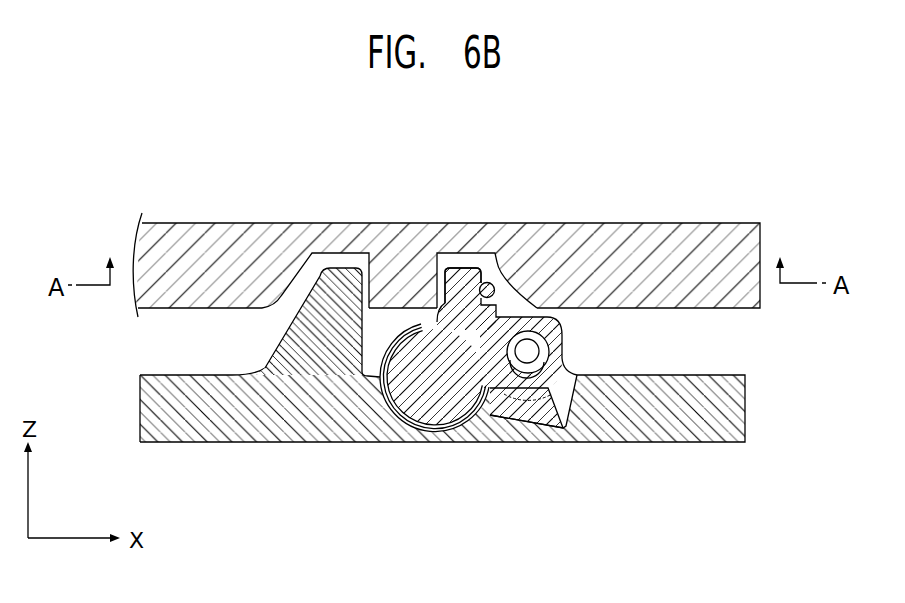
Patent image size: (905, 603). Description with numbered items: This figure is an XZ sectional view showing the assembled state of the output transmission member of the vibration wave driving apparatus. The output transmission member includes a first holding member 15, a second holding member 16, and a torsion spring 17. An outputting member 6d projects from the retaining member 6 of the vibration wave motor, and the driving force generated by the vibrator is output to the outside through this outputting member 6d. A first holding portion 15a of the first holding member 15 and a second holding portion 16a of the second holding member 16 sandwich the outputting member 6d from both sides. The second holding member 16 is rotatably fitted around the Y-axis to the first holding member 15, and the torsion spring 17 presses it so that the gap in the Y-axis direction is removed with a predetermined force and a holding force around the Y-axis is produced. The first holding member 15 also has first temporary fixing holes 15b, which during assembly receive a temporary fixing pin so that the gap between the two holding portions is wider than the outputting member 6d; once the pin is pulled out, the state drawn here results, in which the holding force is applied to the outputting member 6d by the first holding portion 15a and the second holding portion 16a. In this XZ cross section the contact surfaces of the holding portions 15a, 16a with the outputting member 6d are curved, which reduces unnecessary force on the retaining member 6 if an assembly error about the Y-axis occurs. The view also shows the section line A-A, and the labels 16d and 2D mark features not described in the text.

The retaining member 6 is at (610, 223).
The outputting member 6d is at (393, 266).
The first holding member 15 is at (247, 413).
The first holding portion 15a is at (341, 266).
The first temporary fixing hole 15b is at (527, 420).
The second holding member 16 is at (433, 407).
The second holding portion 16a is at (453, 267).
The hole of hook member 16d is at (562, 332).
The torsion spring 17 is at (505, 274).
The region 2D is at (55, 195).